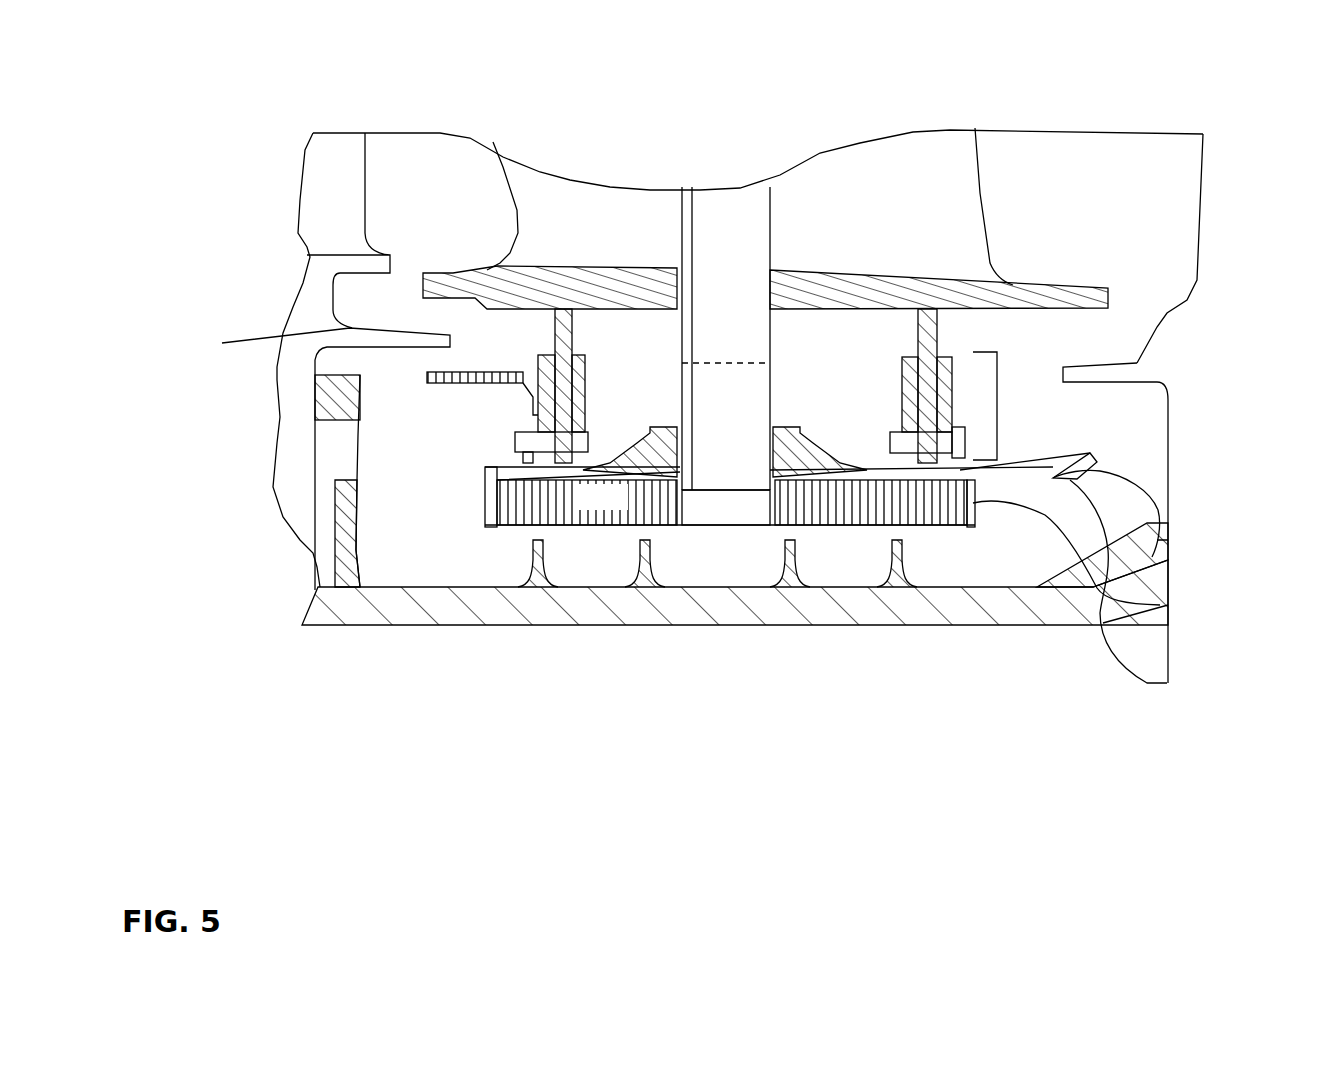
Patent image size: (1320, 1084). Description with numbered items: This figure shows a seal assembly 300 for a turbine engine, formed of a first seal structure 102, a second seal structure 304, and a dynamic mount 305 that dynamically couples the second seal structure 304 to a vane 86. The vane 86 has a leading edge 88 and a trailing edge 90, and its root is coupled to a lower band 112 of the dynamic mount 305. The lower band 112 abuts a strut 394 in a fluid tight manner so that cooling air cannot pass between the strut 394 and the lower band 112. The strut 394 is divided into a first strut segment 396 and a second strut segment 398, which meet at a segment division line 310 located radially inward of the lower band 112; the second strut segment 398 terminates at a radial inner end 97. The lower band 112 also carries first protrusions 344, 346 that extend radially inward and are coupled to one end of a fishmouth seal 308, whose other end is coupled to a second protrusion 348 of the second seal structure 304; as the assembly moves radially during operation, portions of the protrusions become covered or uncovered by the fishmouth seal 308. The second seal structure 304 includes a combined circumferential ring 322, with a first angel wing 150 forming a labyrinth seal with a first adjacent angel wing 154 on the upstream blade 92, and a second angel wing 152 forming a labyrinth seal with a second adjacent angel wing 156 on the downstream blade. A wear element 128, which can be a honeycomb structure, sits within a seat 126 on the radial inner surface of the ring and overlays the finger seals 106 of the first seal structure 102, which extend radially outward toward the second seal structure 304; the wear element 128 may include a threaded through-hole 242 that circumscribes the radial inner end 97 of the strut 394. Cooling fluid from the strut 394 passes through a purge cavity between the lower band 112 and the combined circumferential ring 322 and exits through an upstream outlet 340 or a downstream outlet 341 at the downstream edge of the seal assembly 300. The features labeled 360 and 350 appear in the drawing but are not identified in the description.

The seal assembly 300 is at (196, 93).
The leading edge 88 is at (493, 150).
The trailing edge 90 is at (980, 158).
The upstream blade 92 is at (345, 205).
The vane 86 is at (928, 205).
The second adjacent angel wing 156 is at (1137, 365).
The fishmouth seal 308 is at (997, 428).
The first adjacent angel wing 154 is at (315, 341).
The lower band 112 is at (617, 268).
The dynamic mount 305 is at (535, 115).
The radial inner end 97 is at (683, 190).
The strut 394 is at (718, 187).
The first strut segment 396 is at (761, 265).
The segment division line 310 is at (726, 350).
The second strut segment 398 is at (760, 443).
The first protrusion 344 is at (563, 309).
The second protrusion 348 is at (538, 417).
The upstream outlet 340 is at (513, 440).
The first protrusion 346 is at (928, 309).
The first angel wing 150 is at (427, 375).
The second seal structure 304 is at (403, 428).
The wear element 128 is at (624, 510).
The blade root 360 is at (646, 370).
The second angel wing 152 is at (1158, 525).
The combined circumferential ring 322 is at (1160, 605).
The seat 126 is at (1167, 683).
The finger seals 106 is at (480, 632).
The first seal structure 102 is at (432, 672).
The through-hole 242 is at (770, 507).
The arm 350 is at (937, 455).
The downstream outlet 341 is at (943, 455).